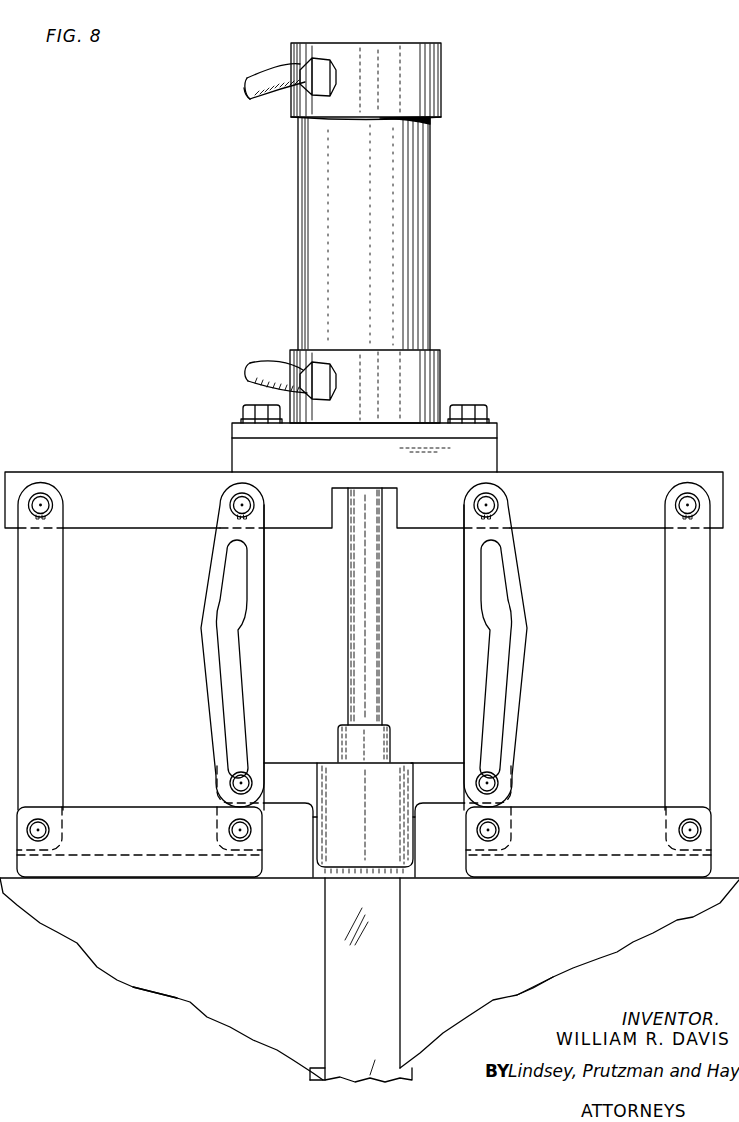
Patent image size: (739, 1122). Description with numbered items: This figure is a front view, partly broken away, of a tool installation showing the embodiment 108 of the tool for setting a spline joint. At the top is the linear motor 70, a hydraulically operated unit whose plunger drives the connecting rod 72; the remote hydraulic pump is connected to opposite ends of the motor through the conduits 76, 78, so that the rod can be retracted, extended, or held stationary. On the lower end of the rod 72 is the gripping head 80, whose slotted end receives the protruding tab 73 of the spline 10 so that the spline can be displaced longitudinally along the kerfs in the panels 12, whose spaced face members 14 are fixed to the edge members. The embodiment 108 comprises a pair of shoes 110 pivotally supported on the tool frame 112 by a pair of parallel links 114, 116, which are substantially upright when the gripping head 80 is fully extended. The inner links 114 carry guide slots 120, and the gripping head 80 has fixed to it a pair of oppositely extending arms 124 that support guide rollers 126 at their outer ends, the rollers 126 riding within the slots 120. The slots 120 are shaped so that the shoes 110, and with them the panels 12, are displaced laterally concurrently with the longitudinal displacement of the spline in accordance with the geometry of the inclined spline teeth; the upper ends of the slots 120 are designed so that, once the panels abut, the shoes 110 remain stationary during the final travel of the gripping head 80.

The spline 10 is at (368, 1004).
The panels 12 is at (226, 970).
The face members 14 is at (177, 997).
The linear motor 70 is at (378, 198).
The connecting rod 72 is at (381, 574).
The protruding tab 73 is at (413, 853).
The conduit 76 is at (280, 378).
The conduit 78 is at (272, 76).
The gripping head 80 is at (372, 823).
The embodiment 108 is at (509, 419).
The shoes 110 is at (131, 870).
The tool frame 112 is at (547, 480).
The inner links 114 is at (261, 631).
The links 116 is at (58, 631).
The guide slots 120 is at (218, 640).
The arms 124 is at (280, 802).
The guide rollers 126 is at (246, 776).